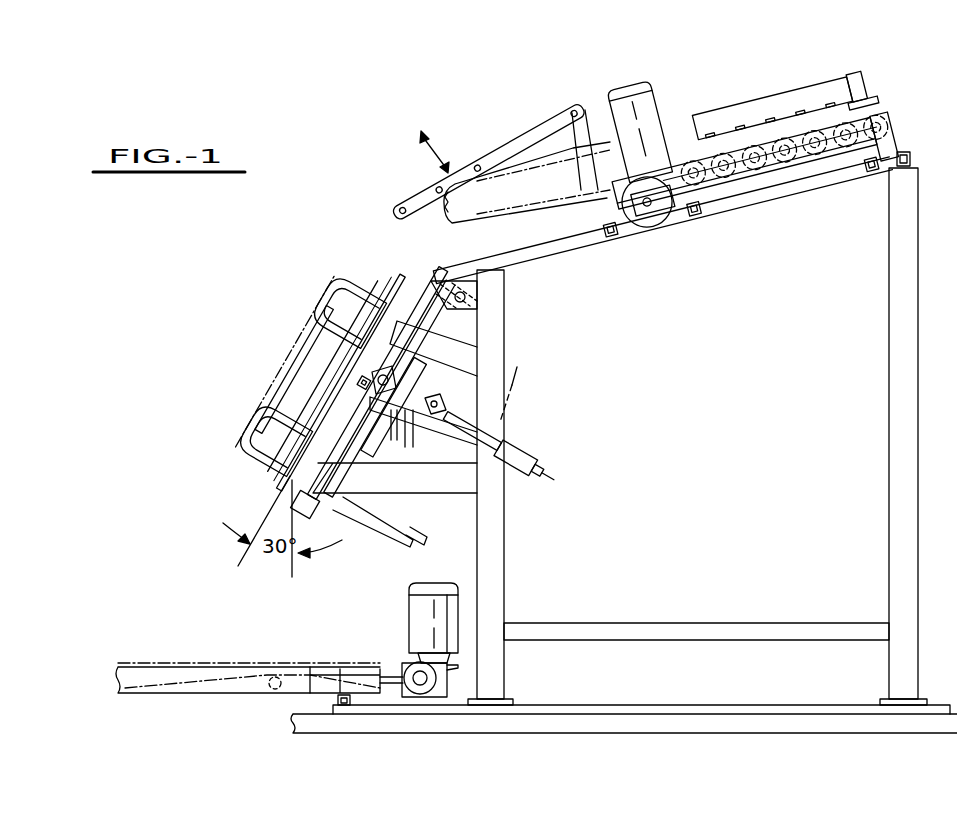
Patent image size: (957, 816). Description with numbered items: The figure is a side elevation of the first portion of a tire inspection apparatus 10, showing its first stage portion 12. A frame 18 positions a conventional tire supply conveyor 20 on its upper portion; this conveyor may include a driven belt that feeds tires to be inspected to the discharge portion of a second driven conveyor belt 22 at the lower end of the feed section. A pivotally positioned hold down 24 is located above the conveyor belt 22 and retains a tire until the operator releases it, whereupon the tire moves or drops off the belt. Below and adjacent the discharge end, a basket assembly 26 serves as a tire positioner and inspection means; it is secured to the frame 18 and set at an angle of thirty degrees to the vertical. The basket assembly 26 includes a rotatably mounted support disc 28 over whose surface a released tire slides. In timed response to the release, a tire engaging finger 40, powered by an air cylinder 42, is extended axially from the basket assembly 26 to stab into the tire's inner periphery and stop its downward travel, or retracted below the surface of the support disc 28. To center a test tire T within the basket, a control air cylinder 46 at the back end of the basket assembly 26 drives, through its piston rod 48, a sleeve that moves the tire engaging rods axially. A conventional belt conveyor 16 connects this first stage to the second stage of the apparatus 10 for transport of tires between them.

The tire inspection apparatus 10 is at (243, 262).
The first stage portion 12 is at (276, 328).
The belt conveyor 16 is at (178, 656).
The frame 18 is at (506, 553).
The tire supply conveyor 20 is at (680, 126).
The second driven conveyor belt 22 is at (540, 198).
The hold down 24 is at (405, 204).
The basket assembly 26 is at (343, 372).
The support disc 28 is at (418, 295).
The tire engaging finger 40 is at (310, 318).
The air cylinder 42 is at (458, 318).
The control air cylinder 46 is at (517, 443).
The piston rod 48 is at (460, 413).
The test tire T is at (250, 447).